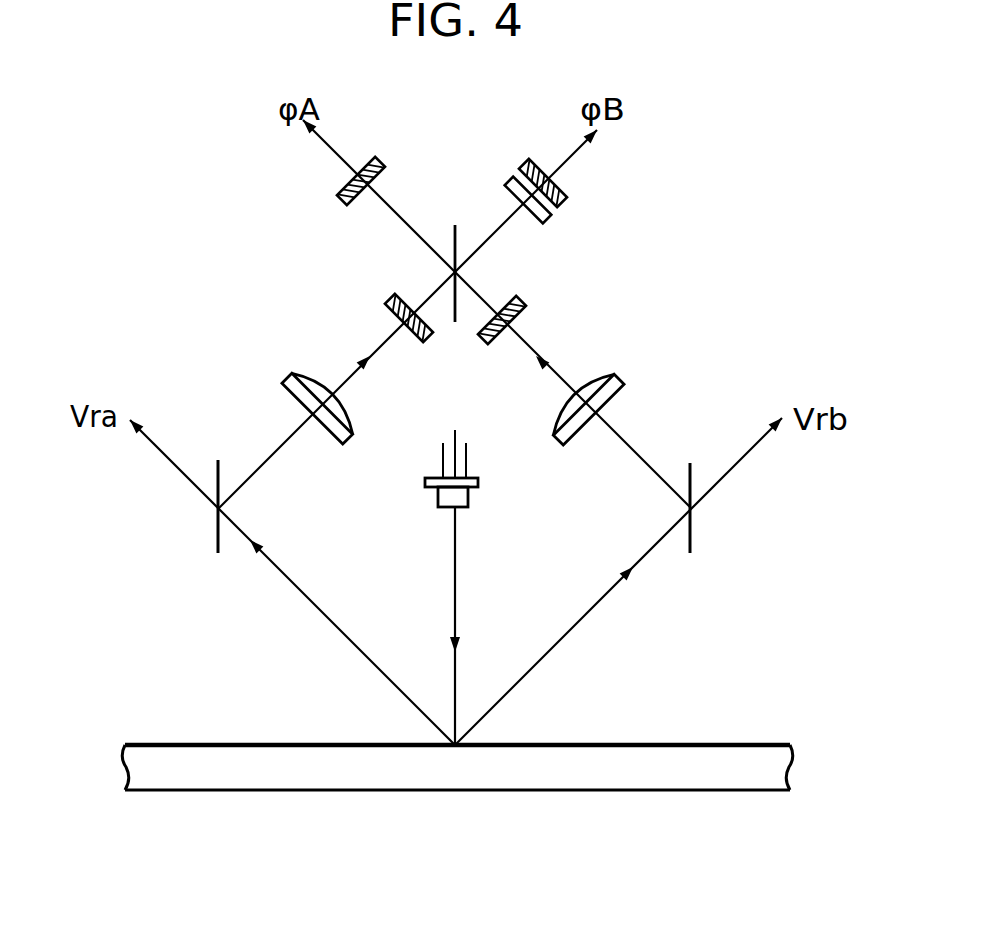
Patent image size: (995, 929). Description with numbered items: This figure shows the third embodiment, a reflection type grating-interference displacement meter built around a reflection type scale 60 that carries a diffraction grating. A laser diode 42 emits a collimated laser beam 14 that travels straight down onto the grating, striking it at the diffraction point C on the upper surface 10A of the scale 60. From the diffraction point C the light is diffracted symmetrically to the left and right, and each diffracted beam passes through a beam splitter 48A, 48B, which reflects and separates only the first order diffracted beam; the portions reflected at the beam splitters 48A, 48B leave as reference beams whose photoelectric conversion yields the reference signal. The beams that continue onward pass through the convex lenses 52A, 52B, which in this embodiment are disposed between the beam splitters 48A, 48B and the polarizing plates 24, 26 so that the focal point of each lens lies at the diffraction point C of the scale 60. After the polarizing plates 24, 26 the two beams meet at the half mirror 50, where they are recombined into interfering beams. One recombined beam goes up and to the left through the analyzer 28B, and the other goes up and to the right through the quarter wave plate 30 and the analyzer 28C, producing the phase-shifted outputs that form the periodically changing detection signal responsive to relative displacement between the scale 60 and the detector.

The laser beam 14 is at (457, 600).
The laser diode 42 is at (470, 507).
The half mirror 50 is at (451, 228).
The polarizing plate 24 is at (385, 302).
The polarizing plate 26 is at (522, 308).
The analyzer 28B is at (345, 187).
The analyzer 28C is at (567, 197).
The quarter wave plate 30 is at (549, 222).
The convex lens 52A is at (291, 379).
The convex lens 52B is at (620, 384).
The beam splitter 48A is at (216, 539).
The beam splitter 48B is at (690, 540).
The diffraction point C is at (460, 742).
The surface of medium 10A is at (750, 743).
The reflection type scale 60 is at (765, 792).